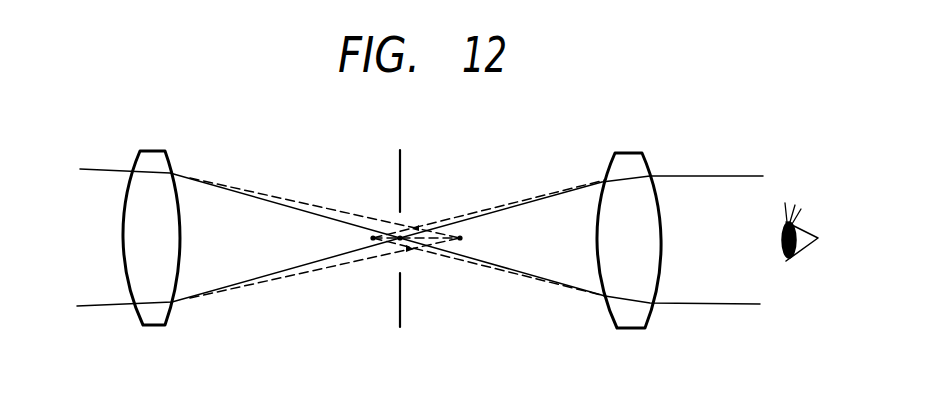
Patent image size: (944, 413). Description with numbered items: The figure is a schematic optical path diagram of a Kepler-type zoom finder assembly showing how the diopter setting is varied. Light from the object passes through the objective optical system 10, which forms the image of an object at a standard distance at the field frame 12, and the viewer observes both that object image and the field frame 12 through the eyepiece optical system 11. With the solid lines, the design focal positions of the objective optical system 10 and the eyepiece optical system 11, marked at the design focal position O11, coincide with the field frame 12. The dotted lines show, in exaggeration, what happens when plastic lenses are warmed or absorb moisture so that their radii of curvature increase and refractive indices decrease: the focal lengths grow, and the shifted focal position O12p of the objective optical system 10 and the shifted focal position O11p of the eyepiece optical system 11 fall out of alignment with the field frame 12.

The objective optical system 10 is at (157, 317).
The eyepiece optical system 11 is at (633, 318).
The field frame 12 is at (400, 287).
The design focal position of the objective optical system O11 is at (401, 237).
The shifted focal position of the eyepiece optical system O11p is at (372, 240).
The shifted focal position of the objective optical system O12p is at (461, 240).